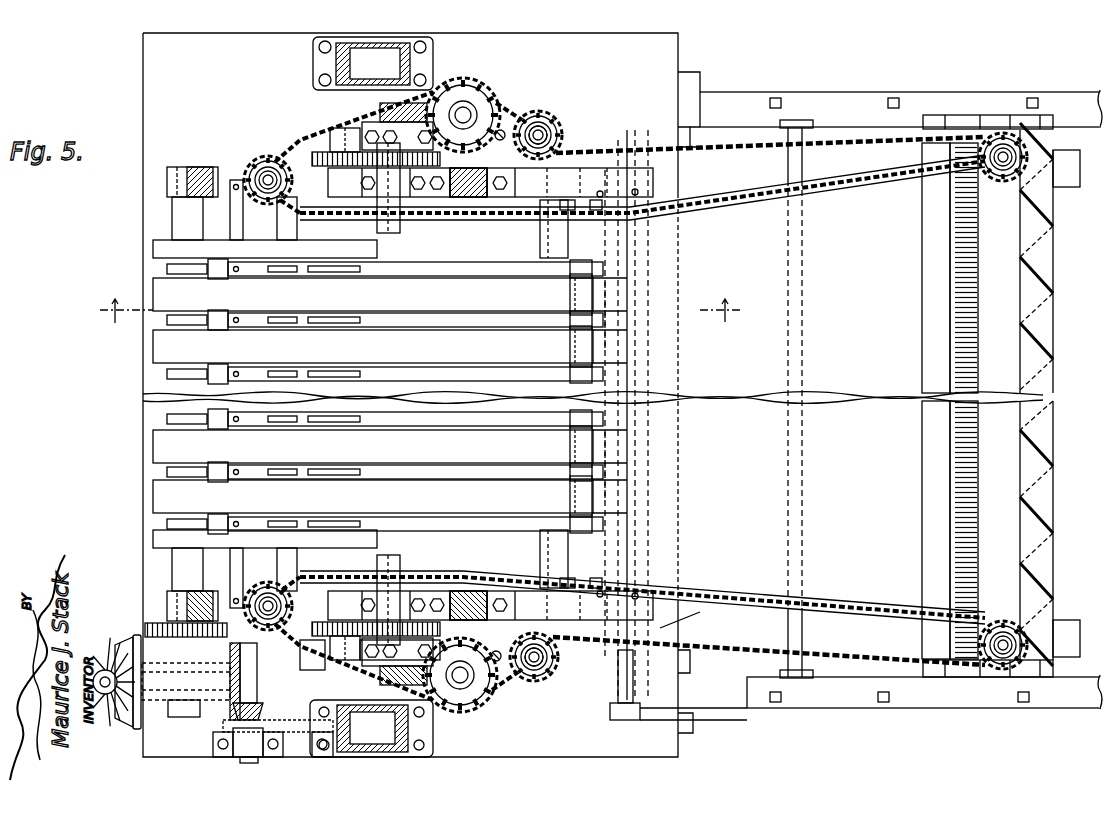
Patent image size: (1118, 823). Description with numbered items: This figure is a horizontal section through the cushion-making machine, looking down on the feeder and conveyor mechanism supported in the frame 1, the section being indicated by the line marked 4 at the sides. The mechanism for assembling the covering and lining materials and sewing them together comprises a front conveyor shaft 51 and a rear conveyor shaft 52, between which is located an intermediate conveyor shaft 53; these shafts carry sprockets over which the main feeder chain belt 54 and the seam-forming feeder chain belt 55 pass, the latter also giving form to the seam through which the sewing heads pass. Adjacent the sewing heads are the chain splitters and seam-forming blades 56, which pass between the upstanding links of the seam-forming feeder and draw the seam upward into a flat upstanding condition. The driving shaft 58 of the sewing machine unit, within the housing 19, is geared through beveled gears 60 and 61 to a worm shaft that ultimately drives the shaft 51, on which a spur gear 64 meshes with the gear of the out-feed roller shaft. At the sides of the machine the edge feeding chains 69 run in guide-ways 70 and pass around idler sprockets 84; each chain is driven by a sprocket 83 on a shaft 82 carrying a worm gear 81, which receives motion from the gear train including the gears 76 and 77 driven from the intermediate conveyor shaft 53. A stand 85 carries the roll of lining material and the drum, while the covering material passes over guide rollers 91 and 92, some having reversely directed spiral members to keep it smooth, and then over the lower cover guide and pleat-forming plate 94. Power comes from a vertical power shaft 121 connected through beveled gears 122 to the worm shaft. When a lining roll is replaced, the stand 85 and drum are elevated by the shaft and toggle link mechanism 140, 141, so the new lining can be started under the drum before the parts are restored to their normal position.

The frame 1 is at (872, 92).
The section line 4- 4 is at (417, 314).
The housing 19 is at (371, 728).
The front conveyor shaft 51 is at (177, 210).
The rear conveyor shaft 52 is at (568, 240).
The intermediate conveyor shaft 53 is at (385, 228).
The main feeder chain belt 54 is at (160, 285).
The seam-forming feeder chain belt 55 is at (440, 367).
The chain splitters and seam-forming blades 56 is at (308, 272).
The driving shaft of the sewing machine unit 58 is at (250, 762).
The beveled gear 60 is at (258, 700).
The beveled gear 61 is at (258, 676).
The spur gear 64 is at (152, 623).
The edge feeding chain 69 is at (712, 152).
The guide-way 70 is at (720, 216).
The gear 76 is at (380, 660).
The gear 77 is at (333, 670).
The worm gear 81 is at (528, 122).
The shaft 82 is at (466, 110).
The sprocket 83 is at (502, 130).
The idler sprocket 84 is at (270, 157).
The stand 85 is at (470, 197).
The guide roller 91 is at (1045, 258).
The guide roller 92 is at (950, 292).
The lower cover guide and pleat-forming plate 94 is at (615, 340).
The vertical power shaft 121 is at (113, 718).
The beveled gears 122 is at (120, 646).
The shaft of the toggle link mechanism 140 is at (640, 700).
The toggle link of the toggle link mechanism 141 is at (705, 610).